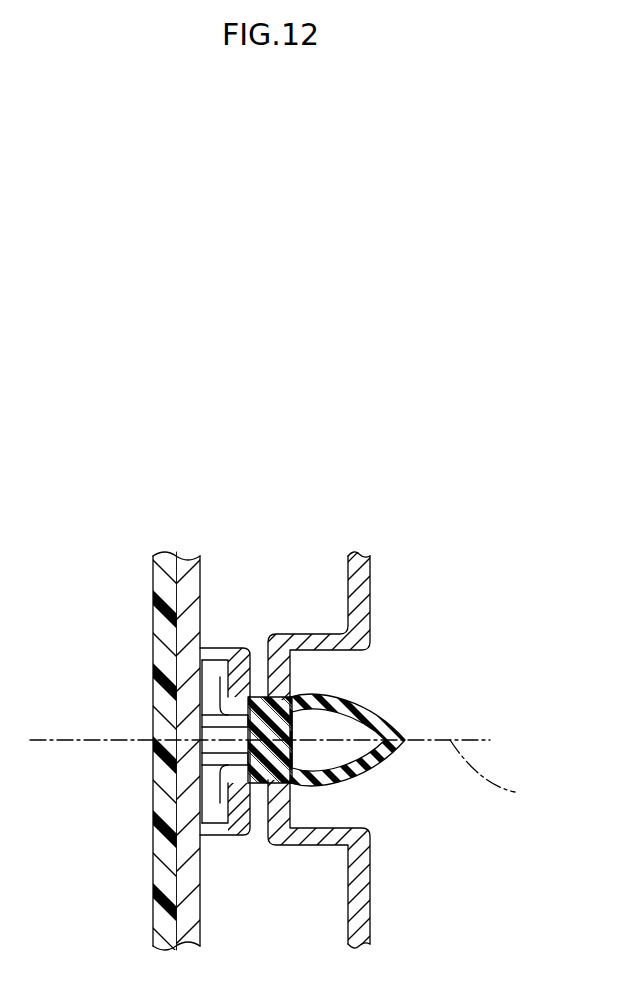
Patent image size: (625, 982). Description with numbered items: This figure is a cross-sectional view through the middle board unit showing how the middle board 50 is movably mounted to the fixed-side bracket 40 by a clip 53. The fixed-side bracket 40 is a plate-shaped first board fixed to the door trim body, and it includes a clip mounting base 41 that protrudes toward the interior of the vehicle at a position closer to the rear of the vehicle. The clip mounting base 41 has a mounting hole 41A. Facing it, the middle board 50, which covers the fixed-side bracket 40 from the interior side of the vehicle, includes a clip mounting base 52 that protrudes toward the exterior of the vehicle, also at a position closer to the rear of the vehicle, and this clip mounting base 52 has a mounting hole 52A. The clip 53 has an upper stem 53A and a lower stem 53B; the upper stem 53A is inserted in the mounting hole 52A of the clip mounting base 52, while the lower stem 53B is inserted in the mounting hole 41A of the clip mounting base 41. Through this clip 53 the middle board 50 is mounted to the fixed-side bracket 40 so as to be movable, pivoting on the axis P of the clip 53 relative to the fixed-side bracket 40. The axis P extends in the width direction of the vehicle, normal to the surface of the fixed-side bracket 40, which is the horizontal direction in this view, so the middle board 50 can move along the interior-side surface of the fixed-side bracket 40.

The fixed-side bracket 40 is at (365, 910).
The clip mounting base 41 is at (292, 838).
The mounting hole 41A is at (350, 778).
The middle board 50 is at (167, 873).
The clip mounting base 52 is at (230, 823).
The mounting hole 52A is at (217, 758).
The clip 53 is at (280, 739).
The upper stem 53A is at (227, 723).
The lower stem 53B is at (383, 718).
The axis P is at (281, 775).